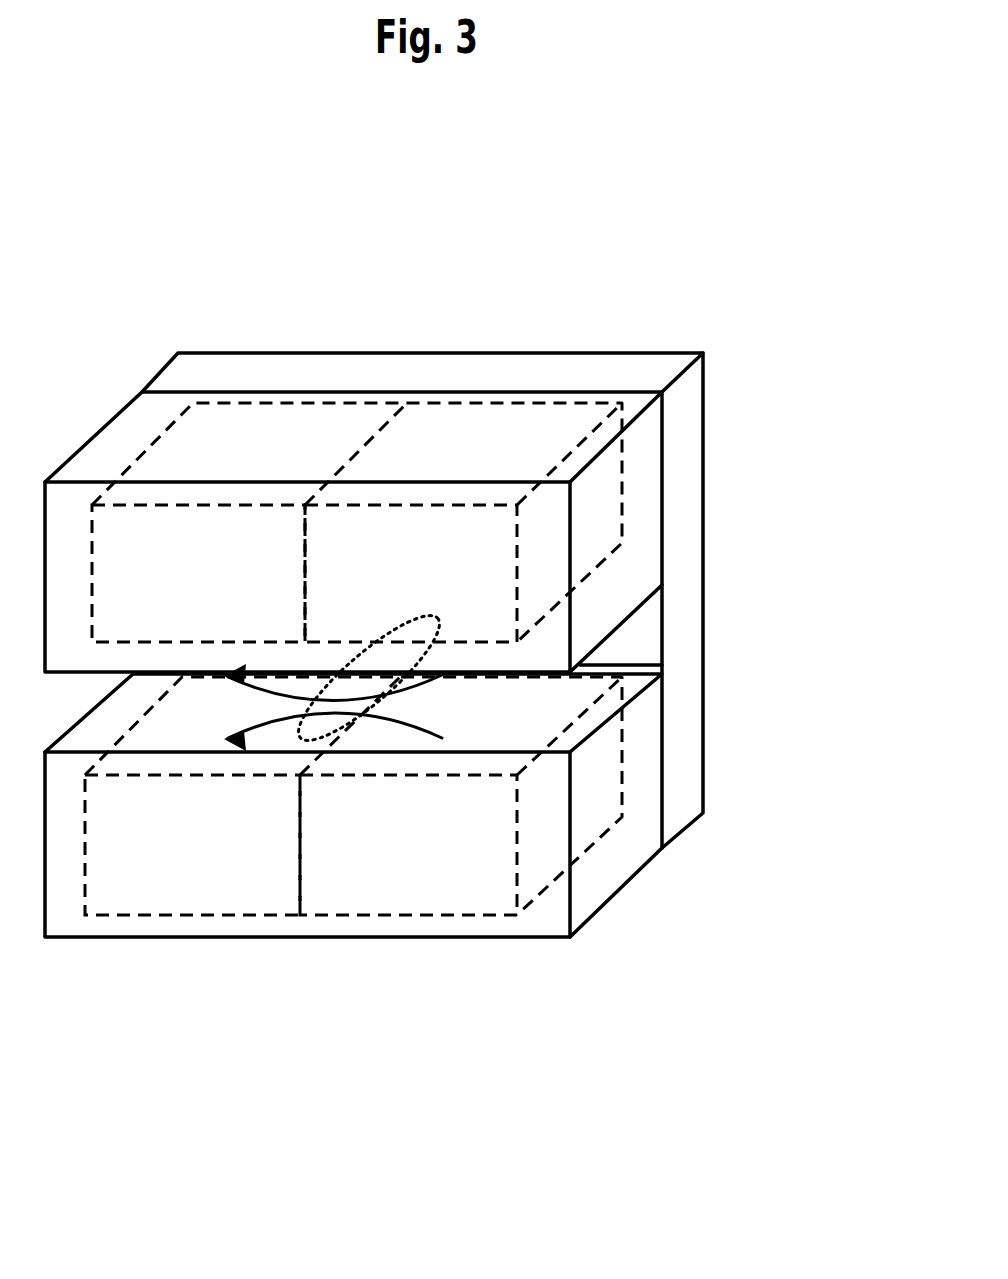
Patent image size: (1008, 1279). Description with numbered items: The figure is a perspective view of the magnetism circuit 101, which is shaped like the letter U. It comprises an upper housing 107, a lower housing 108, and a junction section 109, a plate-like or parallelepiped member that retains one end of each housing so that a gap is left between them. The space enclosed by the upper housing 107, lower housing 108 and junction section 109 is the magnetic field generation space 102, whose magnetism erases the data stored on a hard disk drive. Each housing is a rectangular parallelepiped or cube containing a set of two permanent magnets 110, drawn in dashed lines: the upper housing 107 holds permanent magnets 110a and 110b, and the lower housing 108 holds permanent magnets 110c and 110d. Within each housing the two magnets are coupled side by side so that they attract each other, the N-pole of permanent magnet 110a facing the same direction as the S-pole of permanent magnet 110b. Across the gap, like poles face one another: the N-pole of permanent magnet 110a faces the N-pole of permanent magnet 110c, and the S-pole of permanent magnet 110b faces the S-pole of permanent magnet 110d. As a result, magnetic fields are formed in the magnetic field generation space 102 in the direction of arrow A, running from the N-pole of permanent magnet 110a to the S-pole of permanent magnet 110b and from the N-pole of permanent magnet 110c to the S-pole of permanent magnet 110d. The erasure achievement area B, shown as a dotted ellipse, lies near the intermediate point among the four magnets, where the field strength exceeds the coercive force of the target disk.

The magnetism circuit 101 is at (470, 701).
The magnetic field generation space 102 is at (648, 630).
The upper housing 107 is at (643, 530).
The lower housing 108 is at (643, 793).
The junction section 109 is at (685, 605).
The permanent magnet 110 is at (306, 819).
The permanent magnet 110a is at (488, 630).
The permanent magnet 110b is at (138, 618).
The permanent magnet 110c is at (408, 912).
The permanent magnet 110d is at (253, 867).
The arrow A is at (262, 692).
The erasure achievement area B is at (350, 658).